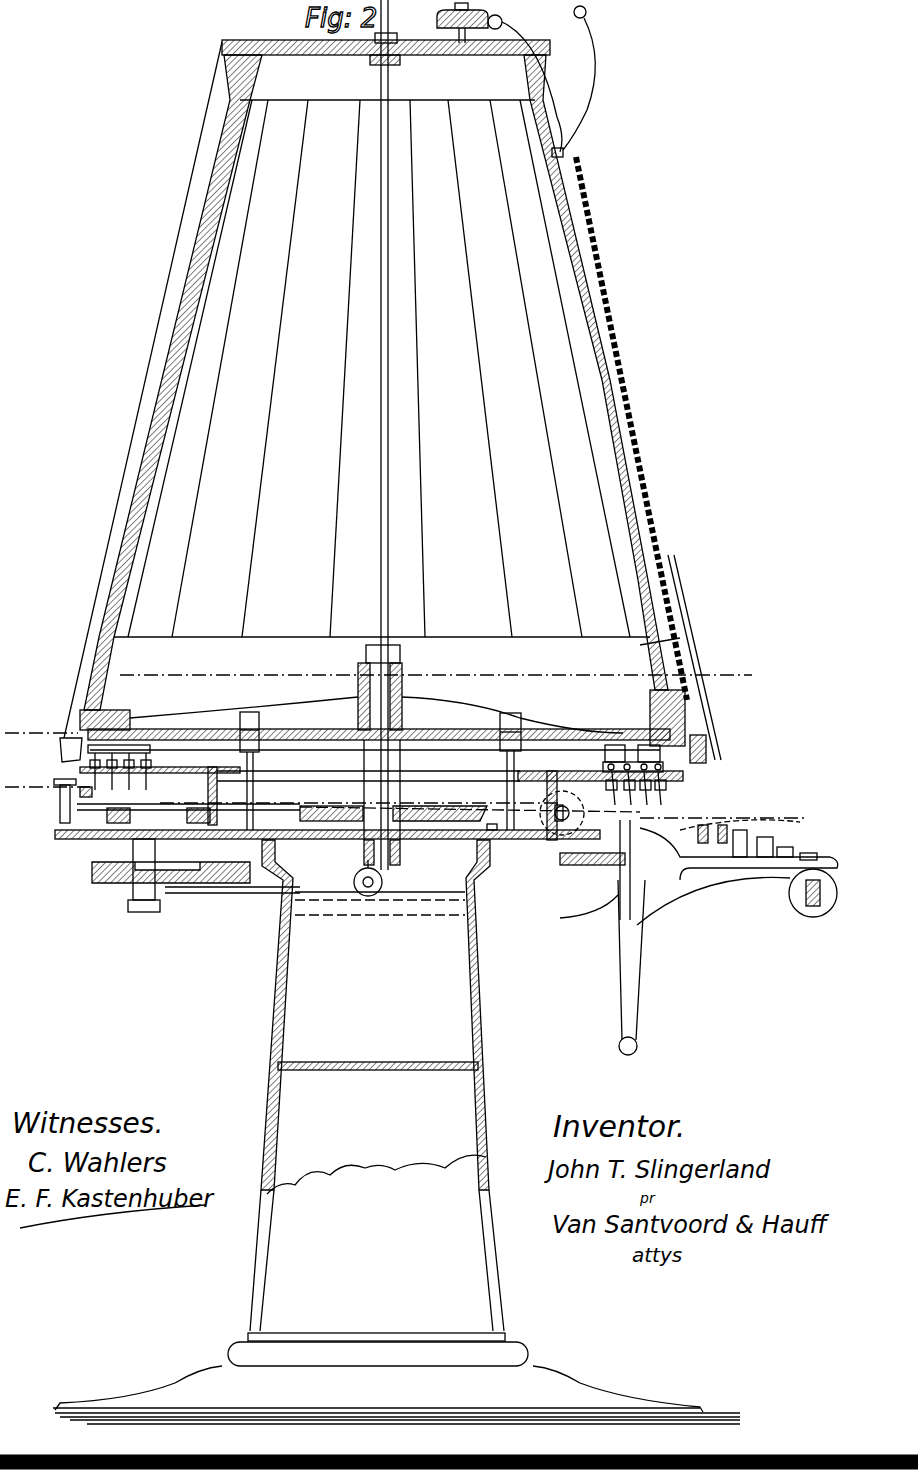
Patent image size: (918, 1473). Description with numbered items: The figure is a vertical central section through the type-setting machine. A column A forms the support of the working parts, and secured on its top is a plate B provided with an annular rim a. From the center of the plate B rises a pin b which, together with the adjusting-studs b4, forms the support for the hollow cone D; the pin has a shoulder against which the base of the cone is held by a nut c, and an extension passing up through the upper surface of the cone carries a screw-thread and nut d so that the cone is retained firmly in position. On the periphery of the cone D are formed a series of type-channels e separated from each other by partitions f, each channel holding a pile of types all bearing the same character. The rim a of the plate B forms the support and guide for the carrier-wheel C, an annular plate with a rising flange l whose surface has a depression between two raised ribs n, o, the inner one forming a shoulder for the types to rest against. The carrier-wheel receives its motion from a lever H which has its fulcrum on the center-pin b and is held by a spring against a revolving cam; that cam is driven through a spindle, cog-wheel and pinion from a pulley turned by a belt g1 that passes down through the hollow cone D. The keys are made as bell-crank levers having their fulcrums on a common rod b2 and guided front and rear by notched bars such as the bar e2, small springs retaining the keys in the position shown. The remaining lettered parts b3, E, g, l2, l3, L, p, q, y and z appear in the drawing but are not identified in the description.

The annular rim a is at (469, 21).
The pin b is at (379, 435).
The common rod b2 is at (631, 967).
The bolt b3 is at (505, 771).
The adjusting-studs b4 is at (255, 771).
The nut c is at (384, 752).
The carrier-wheel C is at (381, 800).
The cone D is at (382, 393).
The type-channels e is at (143, 390).
The notched bar e2 is at (813, 893).
The main plate E is at (379, 759).
The partitions f is at (377, 829).
The post g is at (70, 792).
The belt g1 is at (353, 884).
The lever H is at (358, 857).
The rising flange l is at (389, 29).
The wire l2 is at (532, 87).
The wire l3 is at (573, 81).
The bracket L is at (737, 872).
The raised rib n is at (669, 636).
The raised rib o is at (705, 758).
The chain rail p is at (648, 458).
The skirt bracket q is at (70, 740).
The section line y is at (385, 706).
The section line z is at (412, 803).
The column A is at (396, 1132).
The plate B is at (327, 826).
The nut d is at (196, 860).